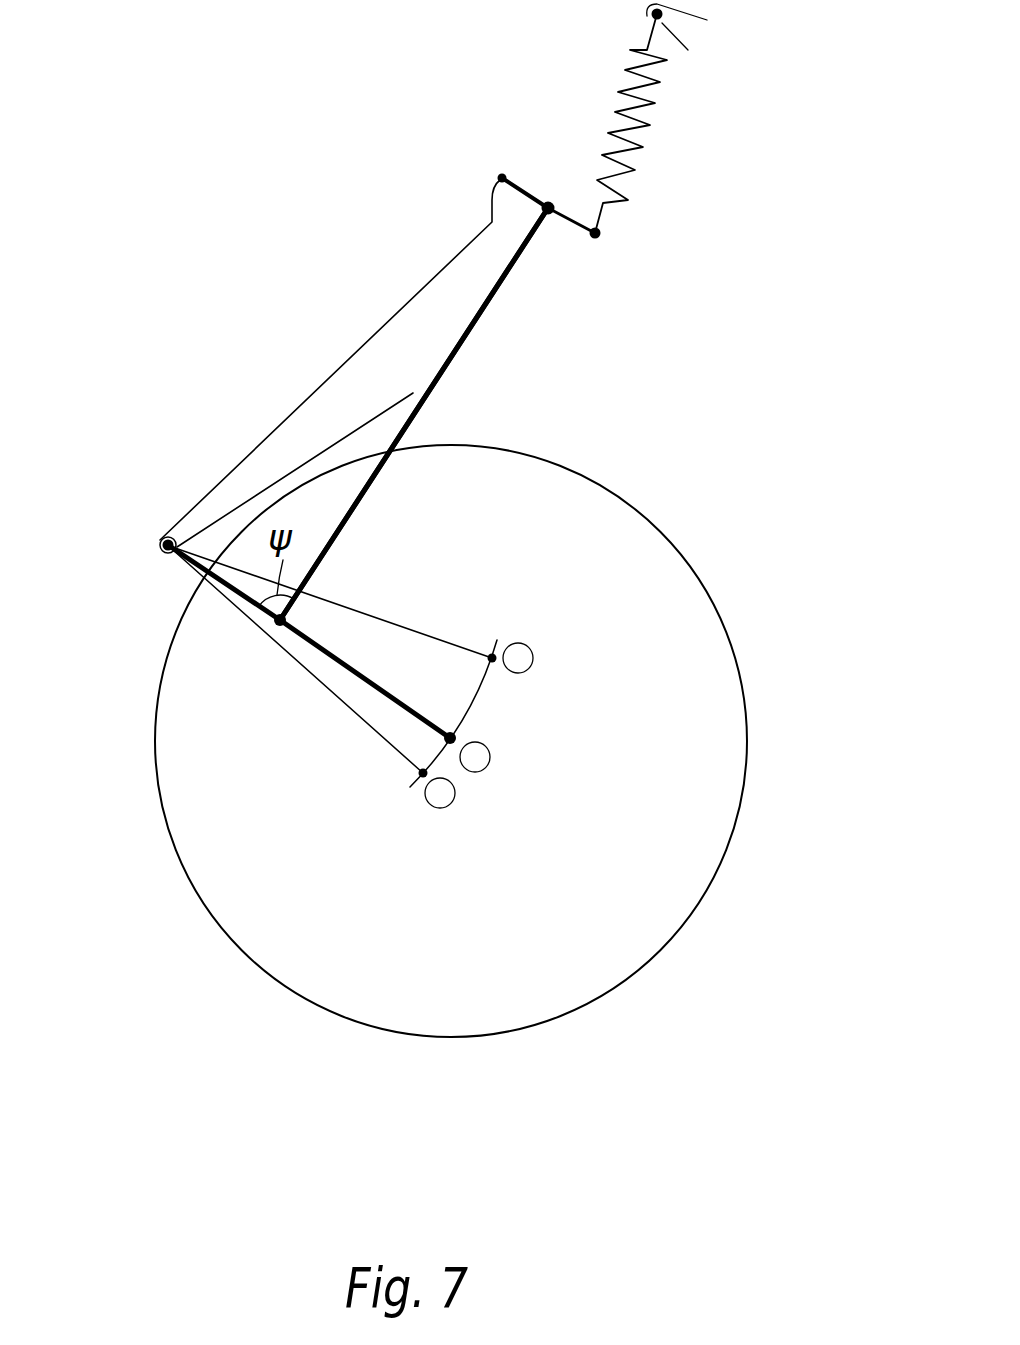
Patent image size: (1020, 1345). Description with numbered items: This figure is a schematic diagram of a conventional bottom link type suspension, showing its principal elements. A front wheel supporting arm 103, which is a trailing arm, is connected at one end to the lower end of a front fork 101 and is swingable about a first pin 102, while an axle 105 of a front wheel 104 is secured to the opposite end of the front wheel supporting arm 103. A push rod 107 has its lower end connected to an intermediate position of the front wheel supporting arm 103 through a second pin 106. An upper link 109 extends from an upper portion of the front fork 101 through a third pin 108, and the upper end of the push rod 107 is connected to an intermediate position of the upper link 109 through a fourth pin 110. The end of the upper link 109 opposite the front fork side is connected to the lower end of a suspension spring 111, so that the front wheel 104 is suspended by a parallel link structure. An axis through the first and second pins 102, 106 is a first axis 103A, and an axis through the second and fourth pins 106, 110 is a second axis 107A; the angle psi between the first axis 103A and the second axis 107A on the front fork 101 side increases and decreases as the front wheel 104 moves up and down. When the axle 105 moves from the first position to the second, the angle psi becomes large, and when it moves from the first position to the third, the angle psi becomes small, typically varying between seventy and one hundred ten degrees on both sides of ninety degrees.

The front fork 101 is at (277, 420).
The first pin 102 is at (160, 543).
The front wheel supporting arm 103 is at (360, 683).
The first axis 103A is at (273, 584).
The front wheel 104 is at (700, 578).
The axle 105 is at (455, 736).
The second pin 106 is at (277, 632).
The push rod 107 is at (447, 370).
The second axis 107A is at (537, 414).
The third pin 108 is at (547, 175).
The upper link 109 is at (567, 227).
The fourth pin 110 is at (552, 207).
The suspension spring 111 is at (637, 133).